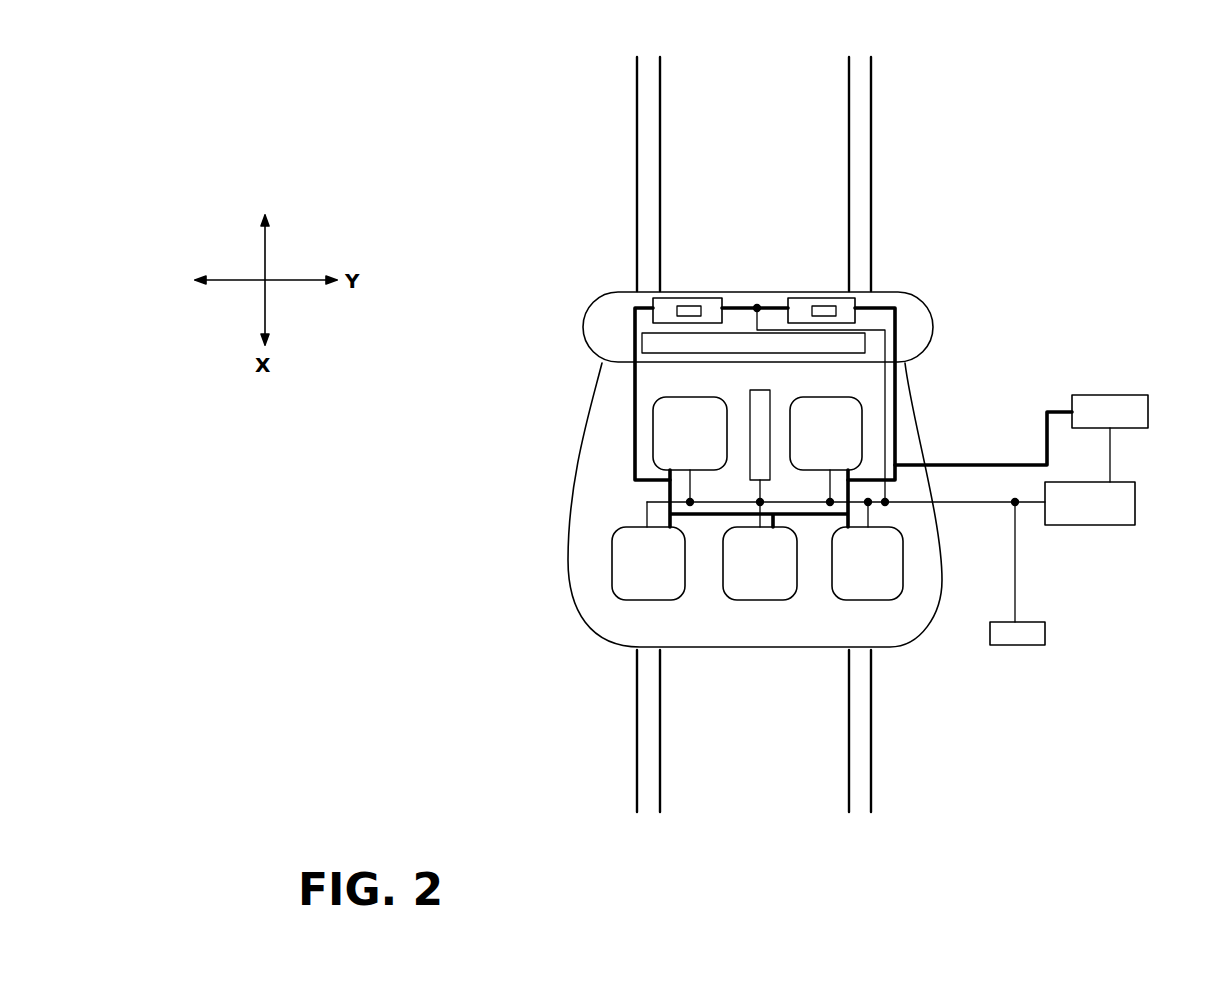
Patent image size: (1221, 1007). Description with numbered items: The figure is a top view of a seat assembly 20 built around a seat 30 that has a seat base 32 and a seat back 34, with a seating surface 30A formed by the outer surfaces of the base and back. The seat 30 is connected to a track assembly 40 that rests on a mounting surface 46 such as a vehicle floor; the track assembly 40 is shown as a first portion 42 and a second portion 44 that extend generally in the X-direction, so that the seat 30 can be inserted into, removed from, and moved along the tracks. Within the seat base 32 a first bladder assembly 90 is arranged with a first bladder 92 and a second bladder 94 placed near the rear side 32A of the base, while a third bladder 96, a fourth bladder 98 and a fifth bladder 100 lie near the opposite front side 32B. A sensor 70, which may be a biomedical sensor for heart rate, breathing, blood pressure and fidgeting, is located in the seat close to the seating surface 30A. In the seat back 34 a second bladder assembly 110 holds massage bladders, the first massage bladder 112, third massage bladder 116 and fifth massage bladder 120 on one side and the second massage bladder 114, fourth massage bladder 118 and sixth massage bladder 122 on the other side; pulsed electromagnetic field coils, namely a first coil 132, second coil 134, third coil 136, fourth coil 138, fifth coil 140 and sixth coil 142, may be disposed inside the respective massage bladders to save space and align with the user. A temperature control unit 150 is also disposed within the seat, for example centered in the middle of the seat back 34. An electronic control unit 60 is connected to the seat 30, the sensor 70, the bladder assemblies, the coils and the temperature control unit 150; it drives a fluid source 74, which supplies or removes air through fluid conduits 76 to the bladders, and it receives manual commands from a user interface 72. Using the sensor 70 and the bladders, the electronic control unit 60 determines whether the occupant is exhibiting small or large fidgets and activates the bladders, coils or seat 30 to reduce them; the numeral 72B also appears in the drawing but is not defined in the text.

The seat assembly 20 is at (1118, 213).
The seat 30 is at (771, 497).
The seating surface 30A is at (622, 363).
The seat base 32 is at (907, 645).
The rear side of the seat base 32A is at (752, 523).
The front side of the seat base 32B is at (810, 752).
The seat back 34 is at (915, 290).
The track assembly 40 is at (755, 813).
The first portion of the track assembly 42 is at (625, 772).
The second portion of the track assembly 44 is at (882, 792).
The mounting surface 46 is at (769, 782).
The electronic control unit 60 is at (1135, 482).
The sensor 70 is at (770, 390).
The user interface 72 is at (1045, 640).
The device portion 72B is at (712, 713).
The fluid source 74 is at (1130, 395).
The fluid conduit 76 is at (1012, 448).
The first bladder assembly 90 is at (617, 487).
The first bladder 92 is at (655, 433).
The second bladder 94 is at (862, 430).
The third bladder 96 is at (610, 586).
The fourth bladder 98 is at (764, 600).
The fifth bladder 100 is at (905, 590).
The second bladder assembly 110 is at (743, 204).
The first massage bladder 112 is at (572, 227).
The second massage bladder 114 is at (926, 204).
The third massage bladder 116 is at (572, 227).
The fourth massage bladder 118 is at (926, 204).
The fifth massage bladder 120 is at (572, 227).
The sixth massage bladder 122 is at (926, 204).
The first coil 132 is at (562, 260).
The second coil 134 is at (938, 238).
The third coil 136 is at (562, 260).
The fourth coil 138 is at (938, 238).
The fifth coil 140 is at (686, 297).
The sixth coil 142 is at (825, 297).
The temperature control unit 150 is at (642, 343).